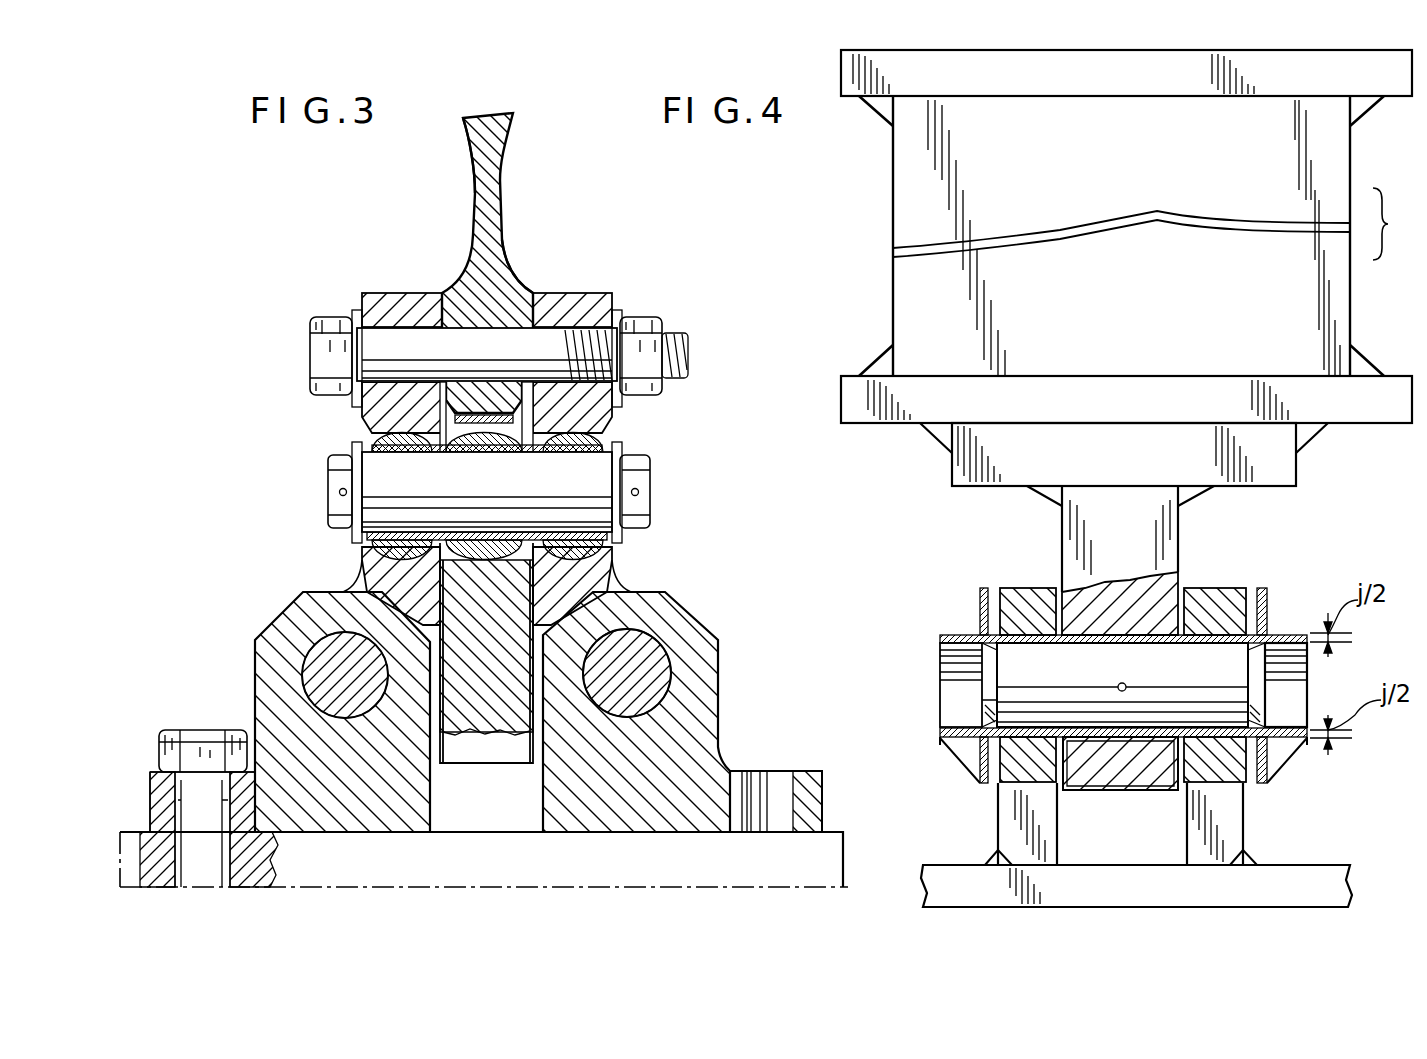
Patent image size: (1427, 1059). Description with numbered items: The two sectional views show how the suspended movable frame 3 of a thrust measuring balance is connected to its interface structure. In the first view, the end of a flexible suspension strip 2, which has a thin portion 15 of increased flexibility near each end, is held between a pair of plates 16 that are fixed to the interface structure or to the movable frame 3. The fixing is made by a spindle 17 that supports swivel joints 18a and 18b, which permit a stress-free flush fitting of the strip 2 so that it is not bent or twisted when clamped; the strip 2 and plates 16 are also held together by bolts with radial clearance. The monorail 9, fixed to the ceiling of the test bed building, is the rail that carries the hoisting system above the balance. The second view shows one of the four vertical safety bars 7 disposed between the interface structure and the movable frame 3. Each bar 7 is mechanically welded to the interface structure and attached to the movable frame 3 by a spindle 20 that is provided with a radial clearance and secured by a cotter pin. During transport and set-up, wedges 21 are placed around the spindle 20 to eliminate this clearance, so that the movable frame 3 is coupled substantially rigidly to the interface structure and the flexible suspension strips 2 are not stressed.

In FIG. 3, the flexible suspension strip 2 is at (468, 133).
In FIG. 3, the thin portion 15 is at (474, 204).
In FIG. 3, the monorail 9 is at (403, 300).
In FIG. 3, the plates 16 is at (363, 407).
In FIG. 3, the spindle 17 is at (337, 478).
In FIG. 3, the swivel joint 18a is at (502, 438).
In FIG. 3, the swivel joint 18b is at (357, 547).
In FIG. 3, the movable frame 3 is at (496, 824).
In FIG. 4, the movable frame 3 is at (960, 868).
In FIG. 4, the vertical safety bar 7 is at (893, 176).
In FIG. 4, the spindle 20 is at (1002, 673).
In FIG. 4, the wedge 21 is at (937, 748).